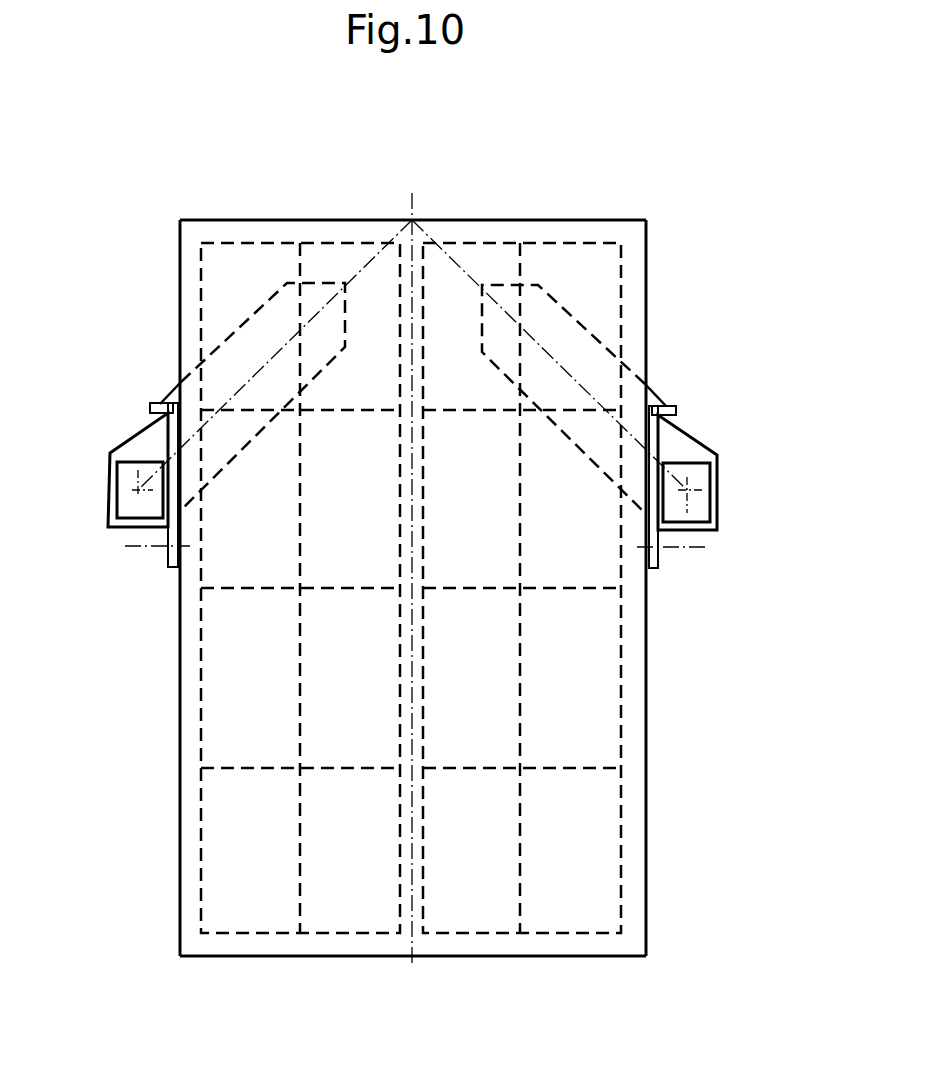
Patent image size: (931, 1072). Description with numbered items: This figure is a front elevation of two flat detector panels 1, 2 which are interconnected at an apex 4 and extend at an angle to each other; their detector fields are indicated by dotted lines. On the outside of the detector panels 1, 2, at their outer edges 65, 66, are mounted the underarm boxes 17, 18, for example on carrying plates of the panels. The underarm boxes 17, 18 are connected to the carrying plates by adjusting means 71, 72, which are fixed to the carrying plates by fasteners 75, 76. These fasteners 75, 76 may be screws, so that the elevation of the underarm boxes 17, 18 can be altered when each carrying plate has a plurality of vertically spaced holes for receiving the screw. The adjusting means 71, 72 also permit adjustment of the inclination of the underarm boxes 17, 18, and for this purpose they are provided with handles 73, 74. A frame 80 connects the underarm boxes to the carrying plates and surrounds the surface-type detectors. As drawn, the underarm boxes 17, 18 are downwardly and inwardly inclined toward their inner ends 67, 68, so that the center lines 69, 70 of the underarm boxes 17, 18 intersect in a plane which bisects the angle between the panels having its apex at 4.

The detector panel 1 is at (285, 218).
The detector panel 2 is at (527, 218).
The interconnection apex 4 is at (408, 938).
The underarm box 17 is at (143, 442).
The underarm box 18 is at (680, 437).
The outer edge 65 is at (178, 642).
The outer edge 66 is at (648, 645).
The inner end 67 is at (287, 283).
The inner end 68 is at (540, 285).
The center line 69 is at (445, 255).
The center line 70 is at (395, 240).
The adjusting means 71 is at (165, 555).
The adjusting means 72 is at (658, 565).
The handle 73 is at (162, 405).
The handle 74 is at (675, 405).
The fastener 75 is at (147, 547).
The fastener 76 is at (685, 548).
The frame 80 is at (713, 490).